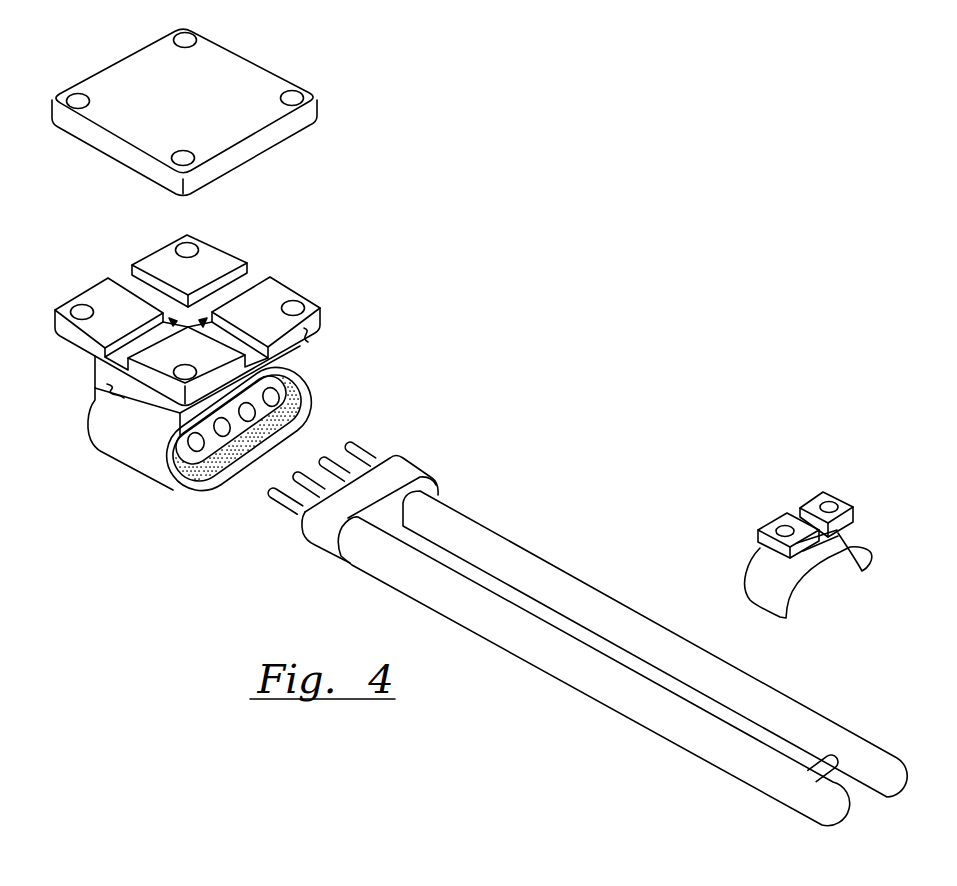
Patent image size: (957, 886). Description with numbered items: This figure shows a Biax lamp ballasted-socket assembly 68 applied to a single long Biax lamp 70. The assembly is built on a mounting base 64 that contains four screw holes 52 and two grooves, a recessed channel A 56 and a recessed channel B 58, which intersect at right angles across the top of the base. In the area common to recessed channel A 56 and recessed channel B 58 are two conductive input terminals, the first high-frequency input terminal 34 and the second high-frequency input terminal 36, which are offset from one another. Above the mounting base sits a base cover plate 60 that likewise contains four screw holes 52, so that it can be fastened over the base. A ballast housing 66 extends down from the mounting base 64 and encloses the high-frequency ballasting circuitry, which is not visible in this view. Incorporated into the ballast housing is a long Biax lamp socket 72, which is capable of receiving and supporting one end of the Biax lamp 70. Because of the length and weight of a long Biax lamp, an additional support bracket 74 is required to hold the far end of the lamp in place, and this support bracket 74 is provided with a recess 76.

The high-frequency input terminal #1 34 is at (173, 322).
The high-frequency input terminal #2 36 is at (203, 322).
The screw holes 52 is at (293, 92).
The recessed channel A 56 is at (255, 278).
The recessed channel B 58 is at (125, 278).
The base cover plate 60 is at (268, 158).
The mounting base 64 is at (307, 337).
The ballast housing 66 is at (108, 385).
The Biax lamp ballasted-socket assembly 68 is at (162, 451).
The long Biax lamp 70 is at (541, 553).
The long Biax lamp socket 72 is at (213, 445).
The support bracket 74 is at (783, 532).
The recess 76 is at (792, 517).